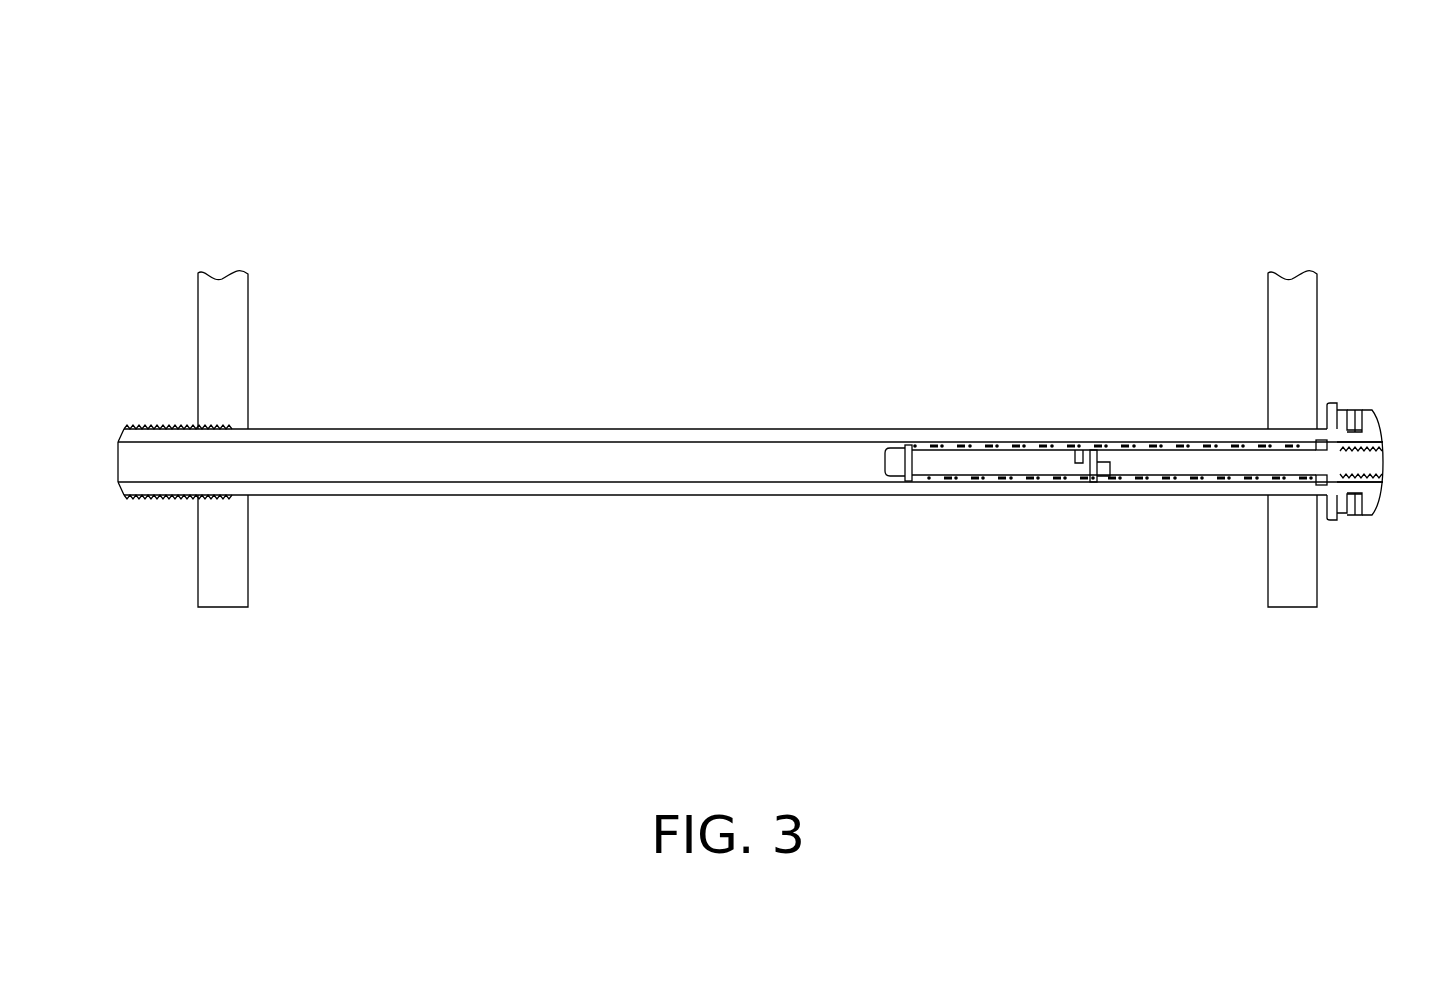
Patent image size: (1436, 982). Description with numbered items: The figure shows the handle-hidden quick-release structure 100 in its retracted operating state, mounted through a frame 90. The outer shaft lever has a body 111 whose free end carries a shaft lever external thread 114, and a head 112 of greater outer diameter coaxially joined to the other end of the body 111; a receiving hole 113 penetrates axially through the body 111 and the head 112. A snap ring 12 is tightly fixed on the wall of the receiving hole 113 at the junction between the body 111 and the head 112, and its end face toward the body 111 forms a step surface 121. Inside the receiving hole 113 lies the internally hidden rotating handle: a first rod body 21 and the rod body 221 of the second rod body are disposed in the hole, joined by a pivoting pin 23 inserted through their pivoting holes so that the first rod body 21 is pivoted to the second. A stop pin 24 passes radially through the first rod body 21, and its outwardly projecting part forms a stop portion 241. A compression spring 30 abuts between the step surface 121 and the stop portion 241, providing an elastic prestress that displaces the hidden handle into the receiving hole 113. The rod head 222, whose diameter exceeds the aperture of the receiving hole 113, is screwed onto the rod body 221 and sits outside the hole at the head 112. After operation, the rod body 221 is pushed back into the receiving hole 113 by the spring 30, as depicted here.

The handle-hidden quick-release structure 100 is at (185, 170).
The frame 90 is at (212, 382).
The body 111 is at (520, 430).
The receiving hole 113 is at (643, 462).
The shaft lever external thread 114 is at (155, 497).
The stop pin 24 is at (890, 481).
The stop portion 241 is at (910, 445).
The first rod body 21 is at (998, 483).
The pivoting pin 23 is at (1095, 447).
The spring 30 is at (1190, 447).
The rod body 221 is at (1158, 483).
The step surface 121 is at (1316, 446).
The snap ring 12 is at (1325, 484).
The head 112 is at (1340, 518).
The rod head 222 is at (1375, 412).